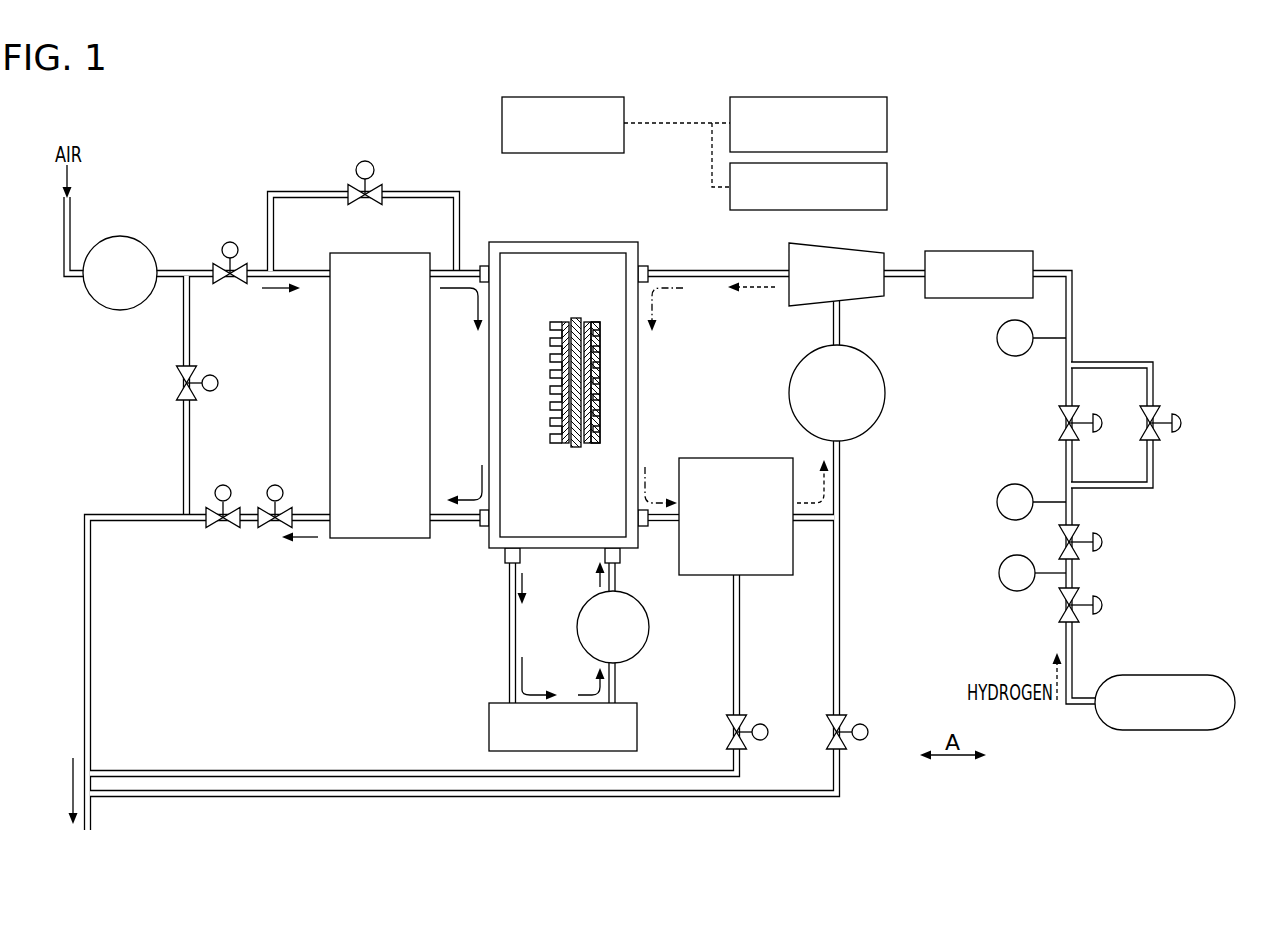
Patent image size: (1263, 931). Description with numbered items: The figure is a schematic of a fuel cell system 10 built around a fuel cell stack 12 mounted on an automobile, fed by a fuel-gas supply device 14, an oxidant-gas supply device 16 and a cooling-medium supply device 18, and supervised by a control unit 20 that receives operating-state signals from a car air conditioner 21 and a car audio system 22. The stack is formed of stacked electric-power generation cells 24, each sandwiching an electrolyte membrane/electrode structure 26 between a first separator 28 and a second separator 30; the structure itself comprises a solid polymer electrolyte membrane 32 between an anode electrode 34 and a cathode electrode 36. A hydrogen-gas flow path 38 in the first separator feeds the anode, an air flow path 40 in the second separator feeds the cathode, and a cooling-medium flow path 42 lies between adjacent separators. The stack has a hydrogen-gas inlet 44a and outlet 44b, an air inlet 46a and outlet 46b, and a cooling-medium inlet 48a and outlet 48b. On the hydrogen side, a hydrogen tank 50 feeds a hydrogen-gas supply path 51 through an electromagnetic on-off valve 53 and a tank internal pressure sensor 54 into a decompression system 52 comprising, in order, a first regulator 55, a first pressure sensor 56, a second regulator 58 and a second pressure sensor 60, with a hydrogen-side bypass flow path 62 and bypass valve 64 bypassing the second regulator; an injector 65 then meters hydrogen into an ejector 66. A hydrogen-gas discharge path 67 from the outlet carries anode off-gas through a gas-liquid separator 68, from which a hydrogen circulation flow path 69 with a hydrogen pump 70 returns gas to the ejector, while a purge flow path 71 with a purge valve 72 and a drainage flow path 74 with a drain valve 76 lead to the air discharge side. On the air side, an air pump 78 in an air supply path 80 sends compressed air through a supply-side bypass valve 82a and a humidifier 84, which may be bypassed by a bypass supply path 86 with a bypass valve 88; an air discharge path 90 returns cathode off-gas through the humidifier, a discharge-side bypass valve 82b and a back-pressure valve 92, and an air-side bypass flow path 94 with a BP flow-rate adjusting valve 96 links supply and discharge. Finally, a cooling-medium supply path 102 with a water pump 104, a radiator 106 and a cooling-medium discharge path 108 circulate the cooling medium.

The fuel cell system 10 is at (1166, 112).
The fuel cell stack 12 is at (607, 363).
The fuel-gas supply device 14 is at (1062, 718).
The oxidant-gas supply device 16 is at (273, 168).
The cooling-medium supply device 18 is at (470, 740).
The control unit 20 is at (501, 113).
The car air conditioner 21 is at (889, 113).
The car audio system 22 is at (889, 178).
The electric-power generation cell 24 is at (543, 262).
The electrolyte membrane/electrode structure 26 is at (614, 359).
The first separator 28 is at (607, 363).
The second separator 30 is at (550, 333).
The solid polymer electrolyte membrane 32 is at (576, 318).
The anode electrode 34 is at (590, 322).
The cathode electrode 36 is at (559, 322).
The hydrogen-gas flow path 38 is at (602, 396).
The air flow path 40 is at (550, 346).
The cooling-medium flow path 42 is at (552, 417).
The hydrogen-gas inlet 44a is at (643, 264).
The hydrogen-gas outlet 44b is at (648, 527).
The air inlet 46a is at (486, 266).
The air outlet 46b is at (482, 527).
The cooling-medium inlet 48a is at (605, 553).
The cooling-medium outlet 48b is at (521, 559).
The hydrogen tank 50 is at (1163, 675).
The hydrogen-gas supply path 51 is at (1065, 630).
The decompression system 52 is at (1157, 352).
The electromagnetic on-off valve 53 is at (1105, 600).
The tank internal pressure sensor 54 is at (1003, 562).
The first regulator 55 is at (1105, 536).
The first pressure sensor 56 is at (1003, 488).
The second regulator 58 is at (1100, 433).
The second pressure sensor 60 is at (1003, 354).
The hydrogen-side bypass flow path 62 is at (1152, 380).
The bypass valve 64 is at (1183, 418).
The injector 65 is at (980, 249).
The ejector 66 is at (837, 247).
The hydrogen-gas discharge path 67 is at (812, 522).
The gas-liquid separator 68 is at (743, 457).
The hydrogen circulation flow path 69 is at (842, 462).
The hydrogen pump 70 is at (885, 379).
The purge flow path 71 is at (842, 543).
The purge valve 72 is at (862, 722).
The drainage flow path 74 is at (320, 770).
The drain valve 76 is at (760, 722).
The air pump 78 is at (125, 236).
The air supply path 80 is at (172, 268).
The supply-side bypass valve 82a is at (230, 241).
The discharge-side bypass valve 82b is at (274, 484).
The humidifier 84 is at (380, 252).
The bypass supply path 86 is at (410, 191).
The bypass valve 88 is at (366, 160).
The air discharge path 90 is at (442, 513).
The back-pressure valve 92 is at (223, 484).
The air-side bypass flow path 94 is at (193, 308).
The BP flow-rate adjusting valve 96 is at (212, 374).
The cooling-medium supply path 102 is at (617, 575).
The water pump 104 is at (648, 643).
The radiator 106 is at (488, 712).
The cooling-medium discharge path 108 is at (510, 638).